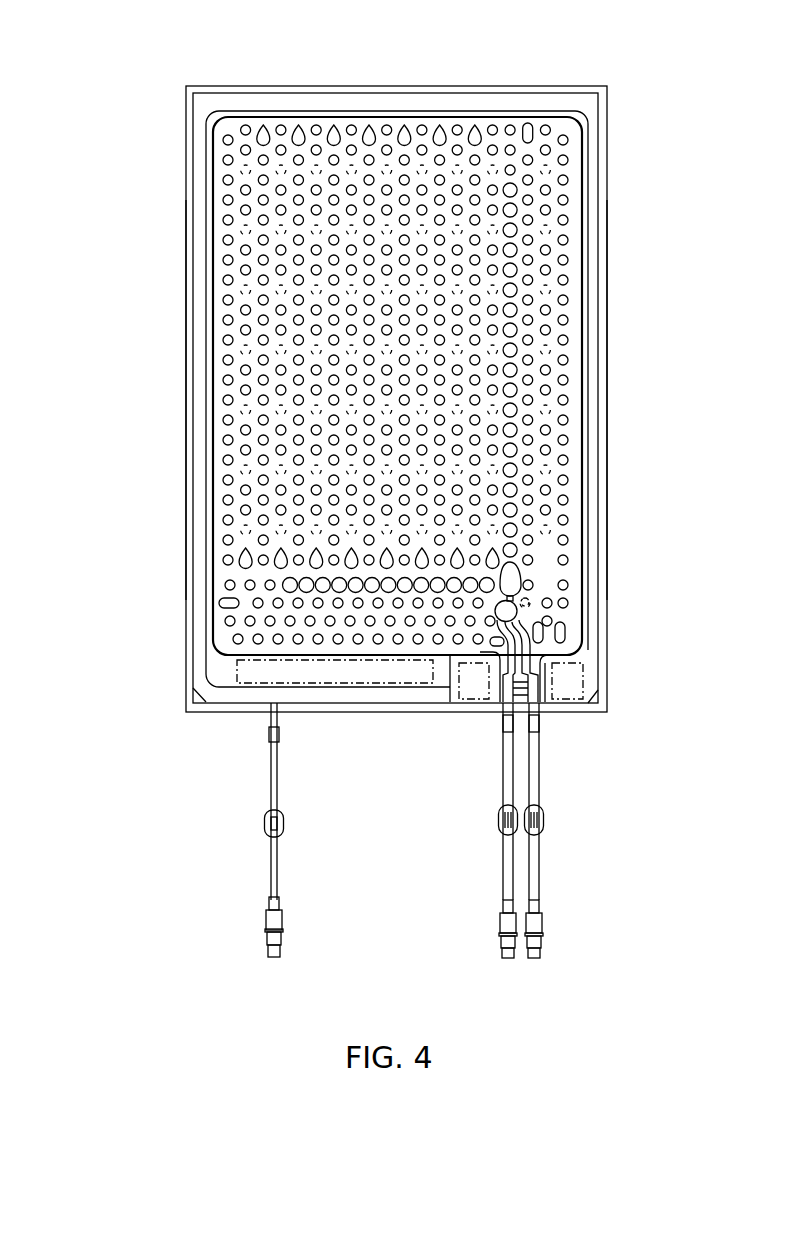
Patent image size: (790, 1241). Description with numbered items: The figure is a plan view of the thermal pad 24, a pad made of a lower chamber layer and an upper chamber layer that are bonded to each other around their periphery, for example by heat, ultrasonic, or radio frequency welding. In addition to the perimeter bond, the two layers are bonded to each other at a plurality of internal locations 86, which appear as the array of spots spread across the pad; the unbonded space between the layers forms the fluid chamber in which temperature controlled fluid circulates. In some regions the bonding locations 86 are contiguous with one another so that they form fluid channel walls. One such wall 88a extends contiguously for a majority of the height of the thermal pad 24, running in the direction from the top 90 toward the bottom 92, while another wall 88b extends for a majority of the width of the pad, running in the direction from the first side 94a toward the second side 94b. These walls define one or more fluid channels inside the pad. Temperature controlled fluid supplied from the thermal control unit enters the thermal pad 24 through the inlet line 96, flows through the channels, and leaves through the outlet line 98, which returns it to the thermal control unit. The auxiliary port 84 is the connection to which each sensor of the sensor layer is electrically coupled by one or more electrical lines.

The thermal pad 24 is at (480, 66).
The top 90 is at (308, 87).
The bottom 92 is at (405, 712).
The first side 94a is at (607, 400).
The second side 94b is at (186, 493).
The internal bonding locations 86 is at (234, 234).
The fluid channel wall 88a is at (516, 481).
The fluid channel wall 88b is at (355, 592).
The auxiliary port 84 is at (283, 939).
The inlet line 96 is at (539, 870).
The outlet line 98 is at (503, 866).